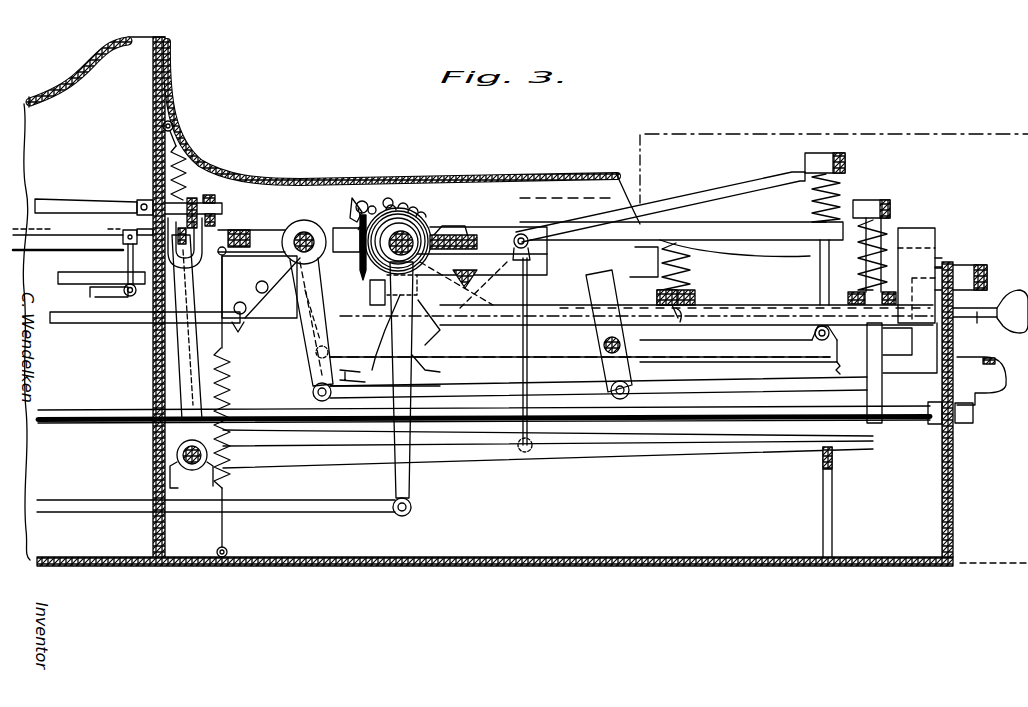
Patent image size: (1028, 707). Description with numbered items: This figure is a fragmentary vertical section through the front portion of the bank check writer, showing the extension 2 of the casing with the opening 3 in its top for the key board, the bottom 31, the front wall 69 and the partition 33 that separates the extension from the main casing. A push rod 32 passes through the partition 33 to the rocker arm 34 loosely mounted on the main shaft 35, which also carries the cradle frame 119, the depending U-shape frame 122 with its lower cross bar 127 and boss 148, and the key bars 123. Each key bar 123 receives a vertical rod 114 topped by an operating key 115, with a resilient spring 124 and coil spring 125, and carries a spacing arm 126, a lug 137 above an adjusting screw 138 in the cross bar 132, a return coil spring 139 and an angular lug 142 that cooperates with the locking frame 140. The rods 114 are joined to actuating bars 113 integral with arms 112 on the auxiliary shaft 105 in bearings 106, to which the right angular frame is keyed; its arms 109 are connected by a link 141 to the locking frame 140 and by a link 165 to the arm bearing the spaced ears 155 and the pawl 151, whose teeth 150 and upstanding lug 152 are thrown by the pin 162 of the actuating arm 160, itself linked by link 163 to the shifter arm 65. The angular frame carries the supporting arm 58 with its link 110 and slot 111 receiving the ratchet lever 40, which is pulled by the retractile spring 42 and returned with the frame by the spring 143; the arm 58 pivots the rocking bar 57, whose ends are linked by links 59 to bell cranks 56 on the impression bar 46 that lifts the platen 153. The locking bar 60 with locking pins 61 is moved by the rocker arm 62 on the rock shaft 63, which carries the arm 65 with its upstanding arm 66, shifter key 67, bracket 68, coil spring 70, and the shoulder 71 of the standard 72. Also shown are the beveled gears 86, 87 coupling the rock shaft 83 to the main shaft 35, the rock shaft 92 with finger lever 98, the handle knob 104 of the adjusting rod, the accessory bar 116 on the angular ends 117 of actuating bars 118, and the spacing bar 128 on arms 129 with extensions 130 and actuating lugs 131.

The extension 2 is at (727, 557).
The opening 3 is at (622, 190).
The bottom 31 is at (463, 566).
The push rod 32 is at (325, 515).
The partition 33 is at (152, 368).
The rocker arm 34 is at (410, 480).
The main shaft 35 is at (410, 222).
The ratchet lever 40 is at (80, 200).
The retractile spring 42 is at (180, 157).
The impression bar 46 is at (78, 272).
The bell crank lever 56 is at (104, 312).
The rocking bar 57 is at (115, 232).
The supporting arm 58 is at (206, 268).
The link 59 is at (125, 262).
The locking bar 60 is at (193, 200).
The locking pin 61 is at (140, 204).
The rocker arm 62 is at (187, 340).
The rock shaft 63 is at (192, 470).
The horizontally extending arm 65 is at (578, 452).
The upstanding arm 66 is at (866, 386).
The shifter key 67 is at (872, 200).
The bracket 68 is at (856, 276).
The front wall 69 is at (941, 462).
The coil spring 70 is at (912, 228).
The shoulder 71 is at (833, 470).
The standard 72 is at (822, 525).
The rock shaft 83 is at (338, 218).
The beveled gear 86 is at (349, 247).
The beveled gear 87 is at (453, 233).
The rock shaft 92 is at (690, 430).
The finger lever 98 is at (1002, 388).
The handle knob 104 is at (1014, 334).
The auxiliary shaft 105 is at (304, 225).
The bearings 106 is at (262, 273).
The right angular arm 109 is at (305, 340).
The link 110 is at (212, 196).
The slot 111 is at (233, 222).
The arm 112 is at (352, 280).
The actuating bar 113 is at (564, 358).
The vertical rod 114 is at (819, 275).
The operating key 115 is at (818, 153).
The accessory bar 116 is at (970, 264).
The forward angular end 117 is at (915, 340).
The actuating bar 118 is at (770, 372).
The cradle frame 119 is at (447, 232).
The U-shape frame 122 is at (392, 334).
The key bar 123 is at (760, 227).
The resilient spring 124 is at (690, 194).
The coil spring 125 is at (812, 194).
The spacing arm 126 is at (470, 278).
The lower cross bar 127 is at (435, 368).
The spacing bar 128 is at (925, 228).
The horizontally disposed arm 129 is at (768, 322).
The upwardly extending extension 130 is at (370, 295).
The actuating lug 131 is at (470, 320).
The cross bar 132 is at (697, 296).
The lug 137 is at (676, 243).
The adjusting screw 138 is at (682, 325).
The coil spring 139 is at (658, 284).
The locking frame 140 is at (590, 288).
The link 141 is at (478, 392).
The angular lug 142 is at (634, 264).
The spring 143 is at (226, 360).
The boss 148 is at (440, 228).
The teeth 150 is at (405, 208).
The pawl 151 is at (398, 200).
The upstanding lug 152 is at (406, 205).
The platen 153 is at (350, 190).
The spaced ears 155 is at (388, 200).
The actuating arm 160 is at (520, 233).
The pin 162 is at (376, 198).
The link 163 is at (528, 284).
The link 165 is at (368, 380).